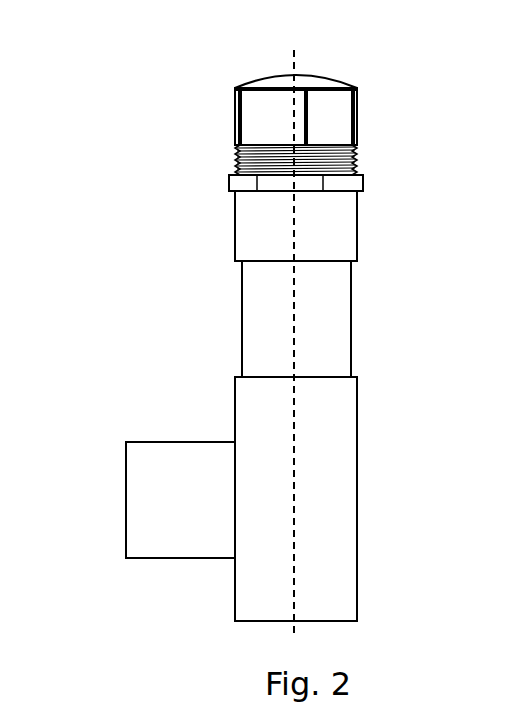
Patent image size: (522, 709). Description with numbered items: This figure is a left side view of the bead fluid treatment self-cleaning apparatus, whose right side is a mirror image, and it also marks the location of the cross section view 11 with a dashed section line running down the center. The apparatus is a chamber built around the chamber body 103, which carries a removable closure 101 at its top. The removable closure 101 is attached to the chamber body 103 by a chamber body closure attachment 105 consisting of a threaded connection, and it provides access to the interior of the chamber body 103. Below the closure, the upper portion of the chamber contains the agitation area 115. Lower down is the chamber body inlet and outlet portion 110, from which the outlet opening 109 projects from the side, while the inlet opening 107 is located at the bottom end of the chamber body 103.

The cross section view location 11 is at (318, 50).
The removable closure 101 is at (255, 135).
The chamber body 103 is at (308, 380).
The chamber body closure attachment 105 is at (250, 158).
The inlet opening 107 is at (275, 622).
The outlet opening 109 is at (125, 495).
The chamber body inlet and outlet portion 110 is at (240, 432).
The agitation area 115 is at (252, 318).